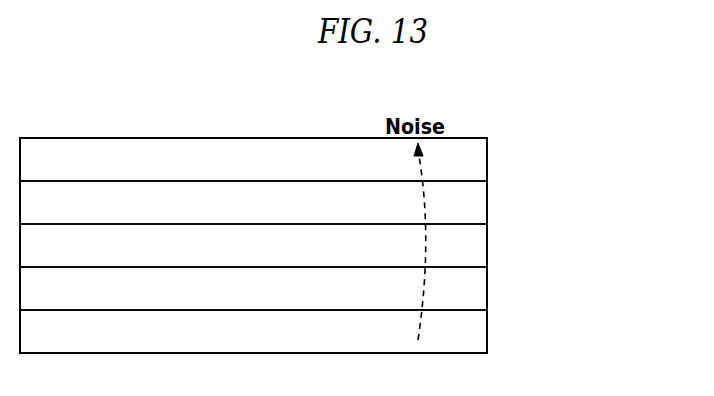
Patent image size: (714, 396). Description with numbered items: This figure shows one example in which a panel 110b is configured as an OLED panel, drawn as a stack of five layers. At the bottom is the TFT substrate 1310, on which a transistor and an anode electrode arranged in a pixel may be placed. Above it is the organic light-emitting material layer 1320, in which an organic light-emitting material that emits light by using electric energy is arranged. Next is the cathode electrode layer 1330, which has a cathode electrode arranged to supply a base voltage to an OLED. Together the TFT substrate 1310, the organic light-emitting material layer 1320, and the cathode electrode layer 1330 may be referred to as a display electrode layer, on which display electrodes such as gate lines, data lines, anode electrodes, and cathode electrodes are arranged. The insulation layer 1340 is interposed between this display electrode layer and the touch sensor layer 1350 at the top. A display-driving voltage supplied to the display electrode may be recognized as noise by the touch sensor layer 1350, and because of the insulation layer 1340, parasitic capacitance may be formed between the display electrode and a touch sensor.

The panel 110b is at (105, 114).
The touch sensor layer 1350 is at (487, 150).
The insulation layer 1340 is at (487, 195).
The cathode electrode layer 1330 is at (487, 240).
The organic light-emitting material layer 1320 is at (487, 285).
The TFT substrate 1310 is at (487, 330).